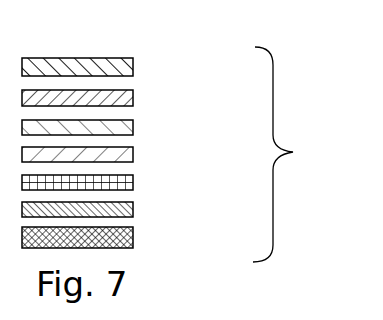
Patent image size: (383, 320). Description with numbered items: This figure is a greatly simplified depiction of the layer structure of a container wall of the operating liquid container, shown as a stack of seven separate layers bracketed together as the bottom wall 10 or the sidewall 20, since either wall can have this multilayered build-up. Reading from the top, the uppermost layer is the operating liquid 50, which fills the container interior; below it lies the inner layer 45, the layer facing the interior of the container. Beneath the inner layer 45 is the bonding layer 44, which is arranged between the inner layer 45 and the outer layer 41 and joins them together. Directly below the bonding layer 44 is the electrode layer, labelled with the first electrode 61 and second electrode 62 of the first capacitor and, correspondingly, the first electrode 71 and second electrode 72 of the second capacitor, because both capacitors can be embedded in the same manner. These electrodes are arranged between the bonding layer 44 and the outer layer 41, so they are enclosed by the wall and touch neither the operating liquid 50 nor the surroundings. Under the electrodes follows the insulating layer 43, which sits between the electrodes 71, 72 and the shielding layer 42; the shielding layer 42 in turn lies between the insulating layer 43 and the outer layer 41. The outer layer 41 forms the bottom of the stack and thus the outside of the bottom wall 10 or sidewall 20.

The operating liquid 50 is at (134, 64).
The inner layer 45 is at (134, 97).
The bonding layer 44 is at (134, 128).
The first electrode 61 is at (134, 160).
The second electrode 62 is at (77, 154).
The first electrode 71 is at (77, 154).
The second electrode 72 is at (77, 154).
The insulating layer 43 is at (134, 181).
The shielding layer 42 is at (134, 208).
The outer layer 41 is at (134, 237).
The bottom wall 10 is at (304, 154).
The sidewall 20 is at (273, 154).